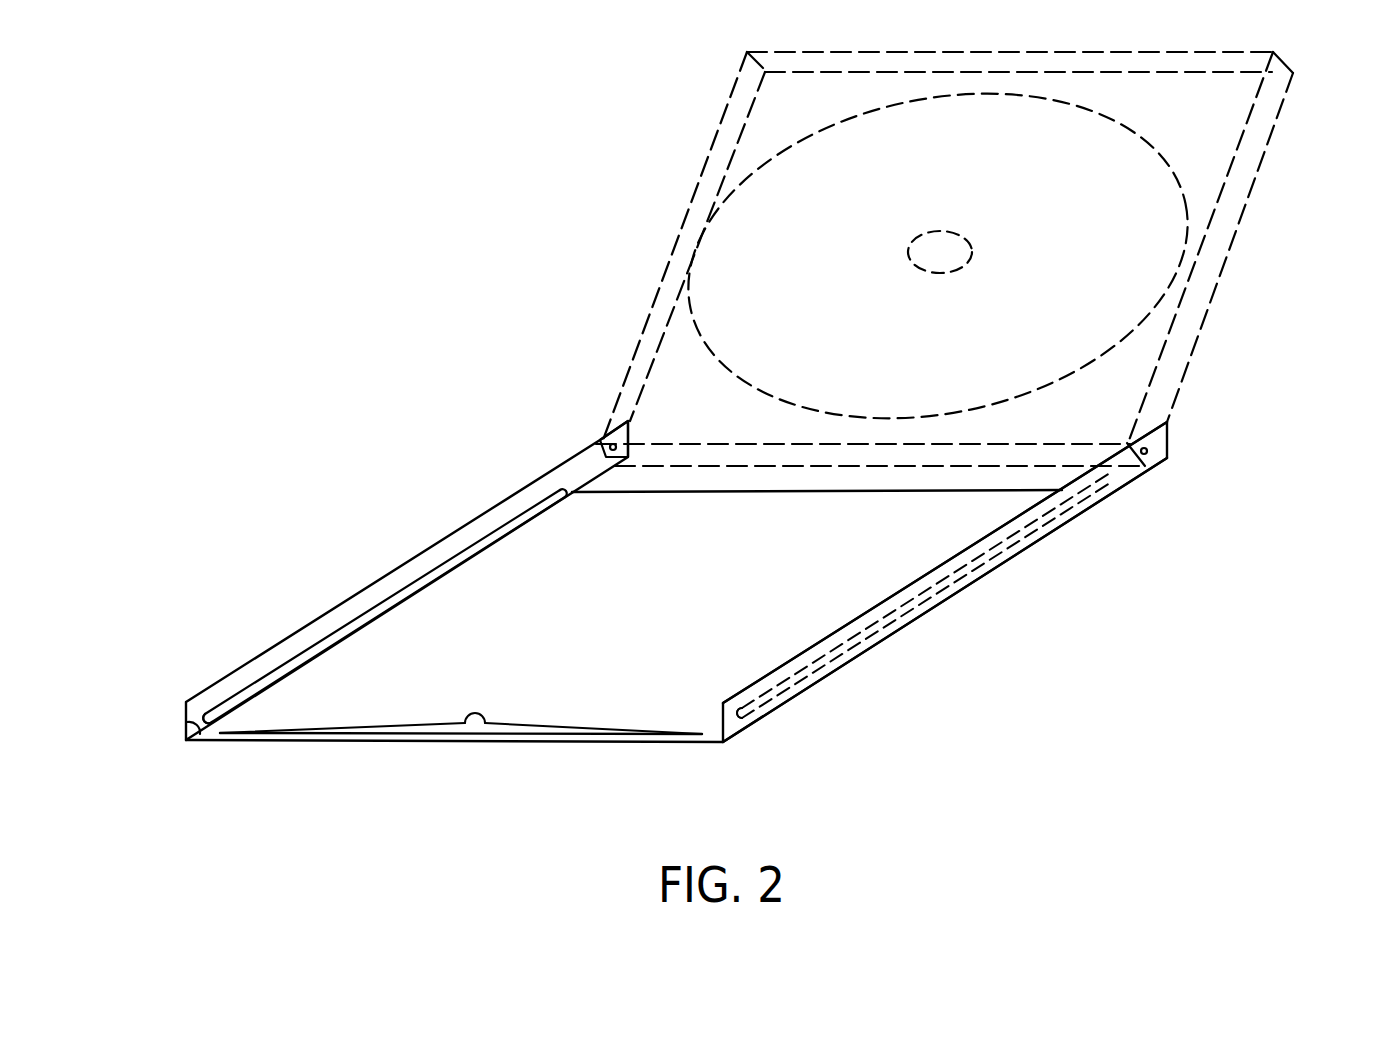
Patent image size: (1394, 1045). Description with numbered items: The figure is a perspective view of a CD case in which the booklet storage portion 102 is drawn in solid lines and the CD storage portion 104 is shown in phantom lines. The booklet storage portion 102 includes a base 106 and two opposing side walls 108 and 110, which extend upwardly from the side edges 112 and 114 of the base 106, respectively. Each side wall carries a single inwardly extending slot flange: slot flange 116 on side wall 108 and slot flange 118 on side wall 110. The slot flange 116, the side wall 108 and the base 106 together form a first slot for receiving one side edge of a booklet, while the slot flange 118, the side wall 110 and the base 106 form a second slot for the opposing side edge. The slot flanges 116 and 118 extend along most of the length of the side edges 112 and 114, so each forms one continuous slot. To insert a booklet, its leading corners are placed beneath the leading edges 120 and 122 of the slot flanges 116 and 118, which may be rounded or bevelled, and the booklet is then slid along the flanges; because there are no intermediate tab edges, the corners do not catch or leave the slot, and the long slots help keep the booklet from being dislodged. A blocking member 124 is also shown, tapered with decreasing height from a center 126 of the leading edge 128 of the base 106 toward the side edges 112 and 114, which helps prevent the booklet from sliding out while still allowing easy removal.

The booklet storage portion 102 is at (1020, 630).
The CD storage portion 104 is at (1240, 329).
The base 106 is at (864, 594).
The side wall 108 is at (581, 467).
The side wall 110 is at (1113, 475).
The side edge 112 is at (187, 725).
The side edge 114 is at (818, 680).
The slot flange 116 is at (418, 585).
The slot flange 118 is at (1020, 535).
The leading edge 120 is at (204, 714).
The leading edge 122 is at (738, 718).
The blocking member 124 is at (413, 732).
The center 126 is at (485, 720).
The leading edge 128 is at (565, 742).